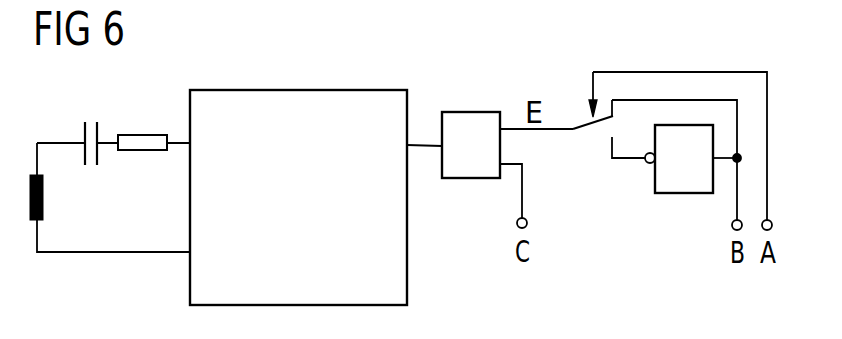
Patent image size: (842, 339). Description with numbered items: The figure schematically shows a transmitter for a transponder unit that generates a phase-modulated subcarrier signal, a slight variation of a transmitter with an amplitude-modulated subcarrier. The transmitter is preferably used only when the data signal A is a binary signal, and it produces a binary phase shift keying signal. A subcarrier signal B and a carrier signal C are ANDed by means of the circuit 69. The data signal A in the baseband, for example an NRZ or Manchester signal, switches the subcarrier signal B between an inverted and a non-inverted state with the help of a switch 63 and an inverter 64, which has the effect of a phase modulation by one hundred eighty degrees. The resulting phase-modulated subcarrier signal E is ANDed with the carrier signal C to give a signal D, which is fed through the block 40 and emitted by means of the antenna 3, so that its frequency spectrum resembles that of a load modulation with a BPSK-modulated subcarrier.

The antenna 3 is at (44, 193).
The evaluation circuit 40 is at (312, 91).
The circuit 69 is at (472, 112).
The switch 63 is at (593, 137).
The inverter 64 is at (673, 208).